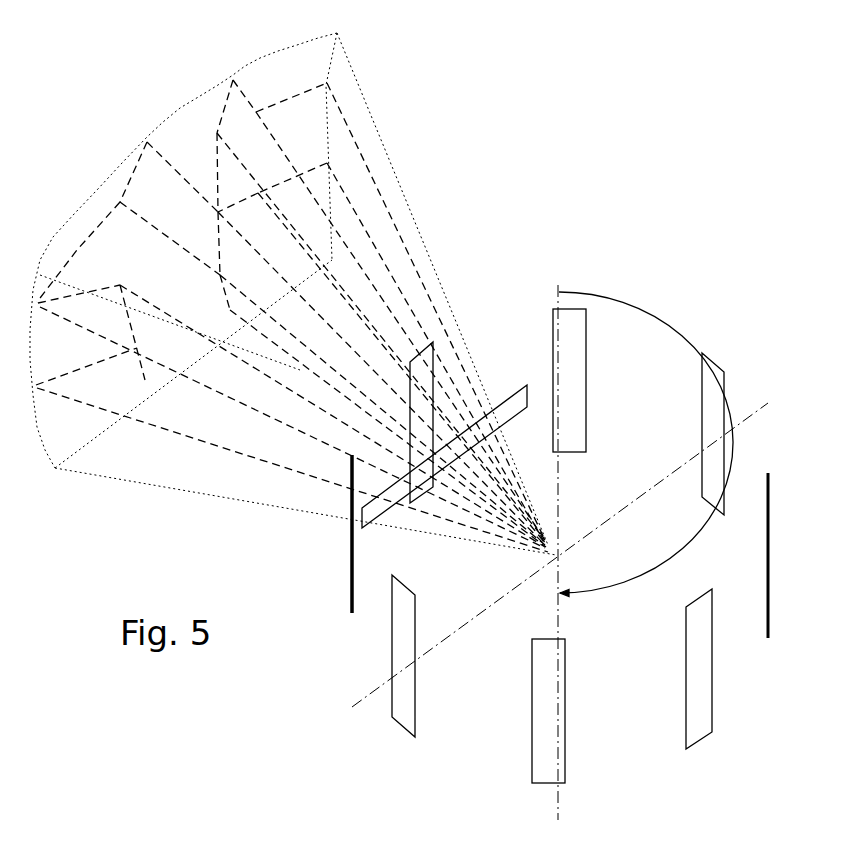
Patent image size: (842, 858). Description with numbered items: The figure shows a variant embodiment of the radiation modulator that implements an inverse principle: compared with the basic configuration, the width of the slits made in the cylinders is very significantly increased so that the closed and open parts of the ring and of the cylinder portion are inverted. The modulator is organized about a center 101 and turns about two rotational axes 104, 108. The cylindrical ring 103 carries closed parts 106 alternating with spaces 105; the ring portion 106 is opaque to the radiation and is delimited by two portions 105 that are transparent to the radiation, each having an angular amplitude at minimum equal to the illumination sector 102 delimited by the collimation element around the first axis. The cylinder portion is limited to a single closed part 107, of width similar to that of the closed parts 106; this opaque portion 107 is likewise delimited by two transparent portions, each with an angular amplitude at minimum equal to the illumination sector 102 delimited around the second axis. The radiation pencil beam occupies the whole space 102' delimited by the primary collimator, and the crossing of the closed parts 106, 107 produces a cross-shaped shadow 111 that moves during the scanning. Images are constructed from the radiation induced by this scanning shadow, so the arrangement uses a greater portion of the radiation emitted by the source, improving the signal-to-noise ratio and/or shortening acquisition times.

The center 101 is at (560, 552).
The illumination sector 102 is at (457, 431).
The space delimited by the primary collimator 102' is at (296, 294).
The cylindrical ring 103 is at (538, 741).
The rotational axis 104 is at (558, 608).
The spaces (portions transparent to the radiation) 105 is at (365, 624).
The closed parts (ring portion opaque to the radiation) 106 is at (410, 355).
The closed part of the cylinder portion 107 is at (358, 522).
The rotational axis 108 is at (634, 498).
The cross-shaped shadow 111 is at (180, 106).